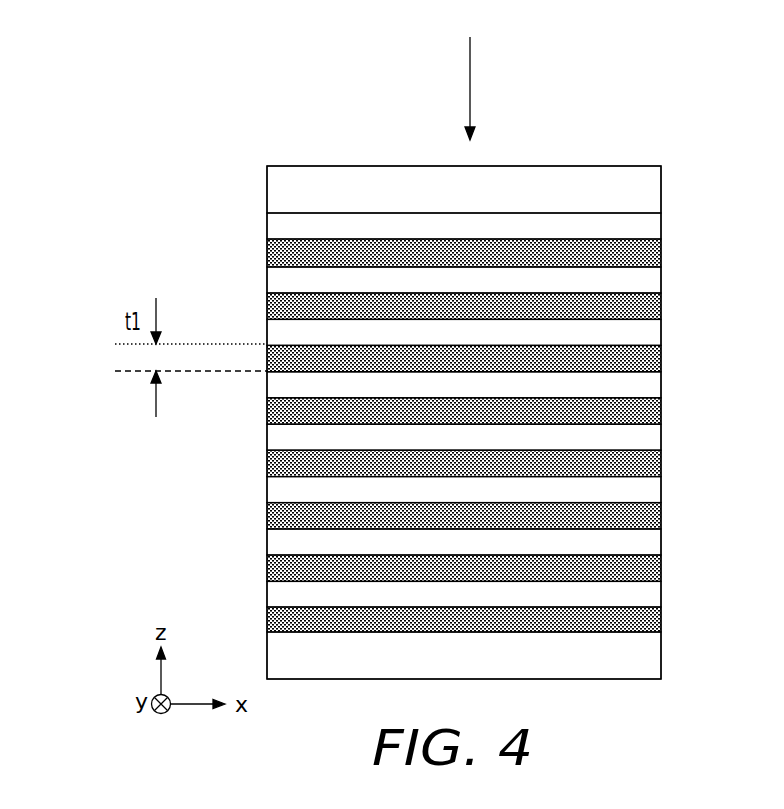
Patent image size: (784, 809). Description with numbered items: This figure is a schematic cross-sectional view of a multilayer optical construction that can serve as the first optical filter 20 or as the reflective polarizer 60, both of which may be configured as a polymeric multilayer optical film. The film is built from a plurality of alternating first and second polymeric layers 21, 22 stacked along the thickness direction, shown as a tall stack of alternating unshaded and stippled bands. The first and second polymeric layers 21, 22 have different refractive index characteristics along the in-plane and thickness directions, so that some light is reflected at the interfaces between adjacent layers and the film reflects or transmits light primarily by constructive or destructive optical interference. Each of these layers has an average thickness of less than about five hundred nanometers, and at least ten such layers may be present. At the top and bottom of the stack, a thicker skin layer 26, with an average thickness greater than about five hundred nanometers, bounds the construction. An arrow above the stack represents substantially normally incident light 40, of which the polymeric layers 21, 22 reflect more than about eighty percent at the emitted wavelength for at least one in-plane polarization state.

The first optical filter 20 is at (349, 420).
The reflective polarizer 60 is at (157, 200).
The first polymeric layer 21 is at (648, 228).
The second polymeric layer 22 is at (645, 248).
The skin layer 26 is at (648, 189).
The incident light 40 is at (470, 87).